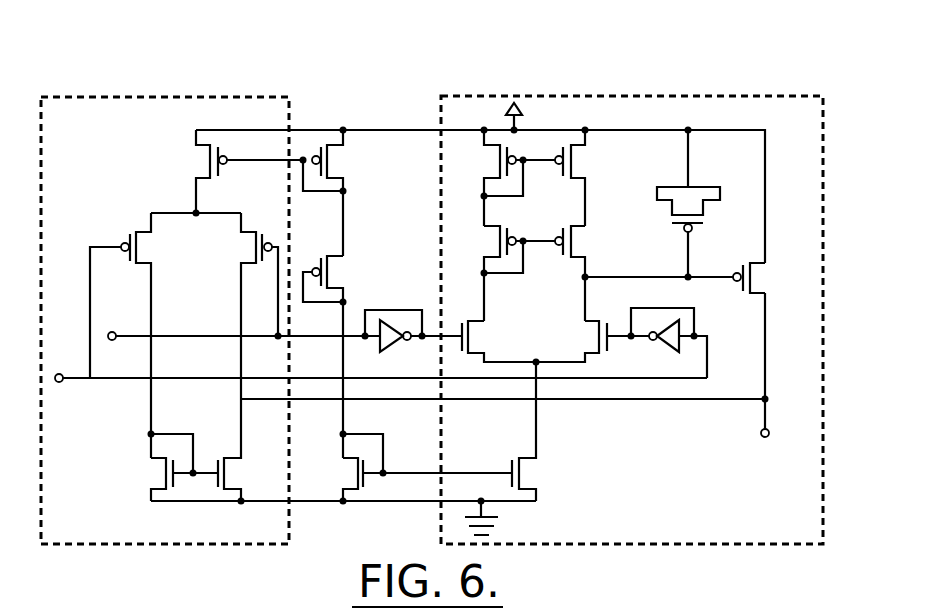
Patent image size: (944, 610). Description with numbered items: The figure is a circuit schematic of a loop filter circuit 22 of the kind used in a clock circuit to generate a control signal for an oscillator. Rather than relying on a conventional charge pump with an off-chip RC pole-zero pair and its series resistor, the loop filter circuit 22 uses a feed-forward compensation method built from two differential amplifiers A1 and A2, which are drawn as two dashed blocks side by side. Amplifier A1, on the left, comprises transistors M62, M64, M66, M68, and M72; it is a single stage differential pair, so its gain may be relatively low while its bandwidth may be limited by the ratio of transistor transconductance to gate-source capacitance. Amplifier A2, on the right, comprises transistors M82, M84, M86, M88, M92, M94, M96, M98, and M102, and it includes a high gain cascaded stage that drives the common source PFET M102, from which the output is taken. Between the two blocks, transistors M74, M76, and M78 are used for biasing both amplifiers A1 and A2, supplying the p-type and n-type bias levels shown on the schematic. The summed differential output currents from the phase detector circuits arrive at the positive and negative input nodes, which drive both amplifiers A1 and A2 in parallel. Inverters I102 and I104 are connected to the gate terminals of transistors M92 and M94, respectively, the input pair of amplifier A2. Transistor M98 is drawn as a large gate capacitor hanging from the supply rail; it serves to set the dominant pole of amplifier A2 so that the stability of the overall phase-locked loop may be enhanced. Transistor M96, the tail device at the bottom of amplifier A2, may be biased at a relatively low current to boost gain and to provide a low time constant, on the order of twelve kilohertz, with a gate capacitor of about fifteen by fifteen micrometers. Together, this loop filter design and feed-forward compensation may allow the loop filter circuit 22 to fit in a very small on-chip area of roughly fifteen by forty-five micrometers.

The loop filter circuit 22 is at (813, 77).
The differential amplifier A1 is at (147, 97).
The differential amplifier A2 is at (575, 96).
The transistor M62 is at (233, 171).
The transistor M64 is at (137, 335).
The transistor M66 is at (242, 306).
The transistor M68 is at (165, 467).
The transistor M72 is at (243, 450).
The transistor M74 is at (341, 193).
The transistor M76 is at (341, 357).
The transistor M78 is at (413, 467).
The transistor M82 is at (501, 178).
The transistor M84 is at (588, 178).
The transistor M86 is at (501, 273).
The transistor M88 is at (588, 273).
The transistor M92 is at (499, 341).
The transistor M94 is at (592, 341).
The transistor M96 is at (542, 431).
The transistor M98 is at (707, 203).
The common source PFET M102 is at (696, 278).
The inverter I102 is at (413, 341).
The inverter I104 is at (667, 343).